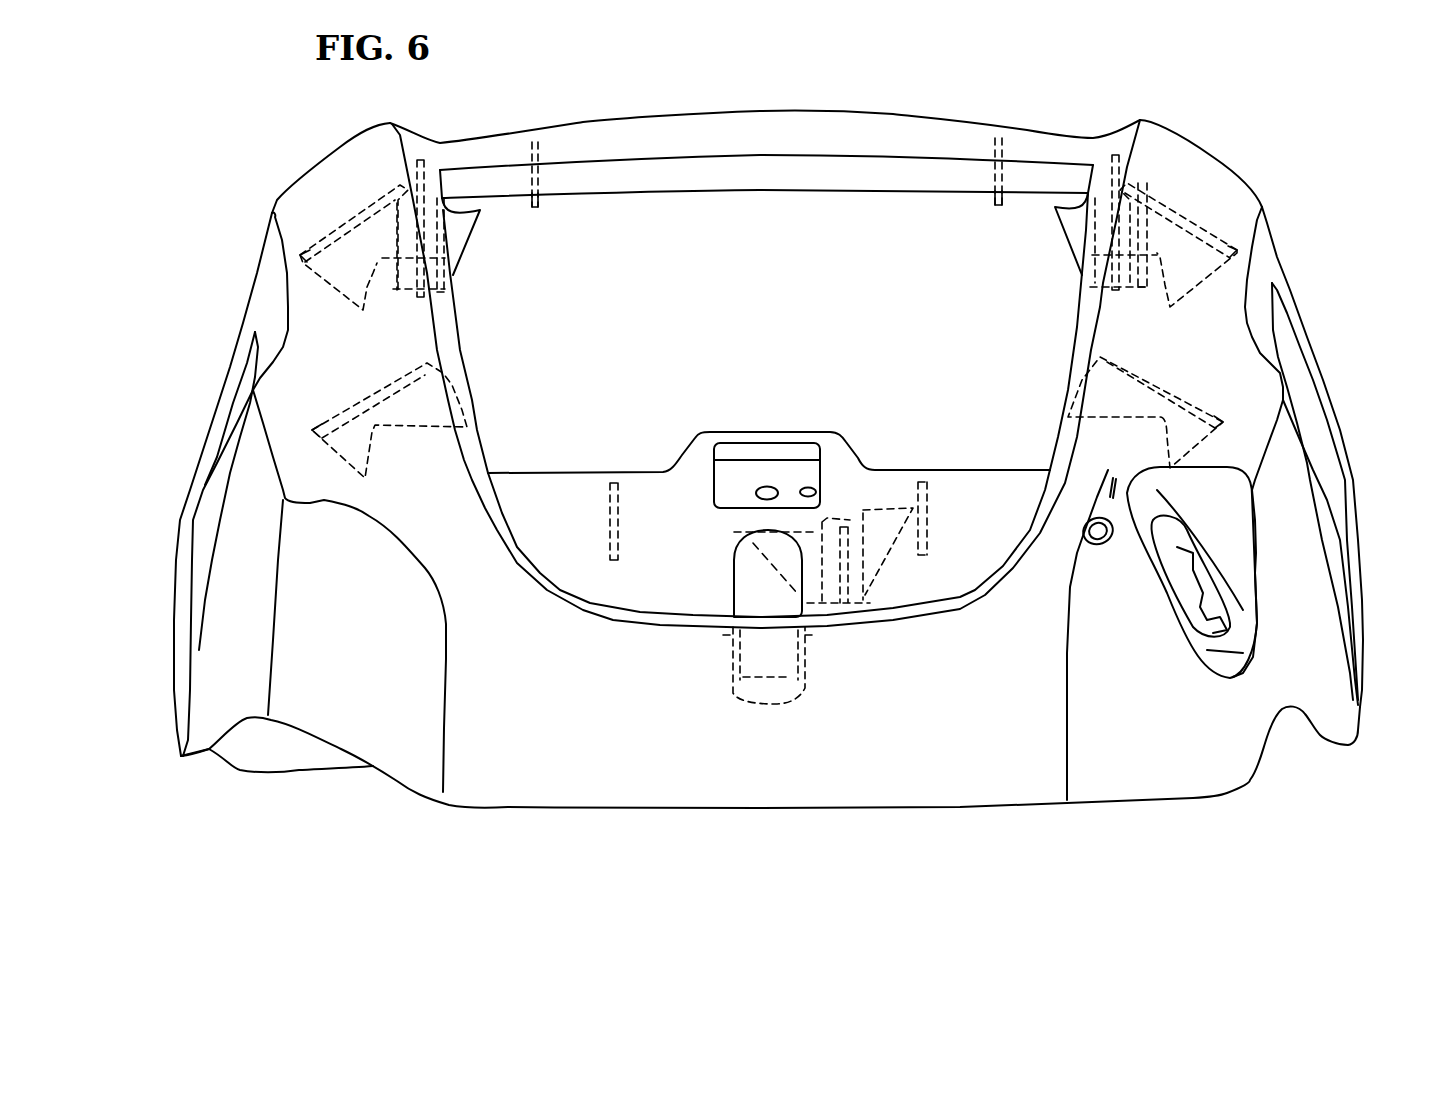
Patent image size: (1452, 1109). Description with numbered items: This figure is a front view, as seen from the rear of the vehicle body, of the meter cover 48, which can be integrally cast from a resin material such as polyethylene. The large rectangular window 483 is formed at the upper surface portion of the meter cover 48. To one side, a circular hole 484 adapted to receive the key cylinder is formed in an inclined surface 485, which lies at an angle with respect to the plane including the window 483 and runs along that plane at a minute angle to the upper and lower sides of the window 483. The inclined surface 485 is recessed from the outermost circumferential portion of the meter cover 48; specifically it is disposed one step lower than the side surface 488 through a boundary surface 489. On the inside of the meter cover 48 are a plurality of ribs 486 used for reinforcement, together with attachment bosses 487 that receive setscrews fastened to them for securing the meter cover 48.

The meter cover 48 is at (378, 780).
The window 483 is at (770, 216).
The circular hole 484 is at (1183, 587).
The inclined surface 485 is at (1210, 650).
The ribs 486 is at (335, 230).
The attachment bosses 487 is at (420, 293).
The side surface 488 is at (1273, 473).
The boundary surface 489 is at (1228, 513).